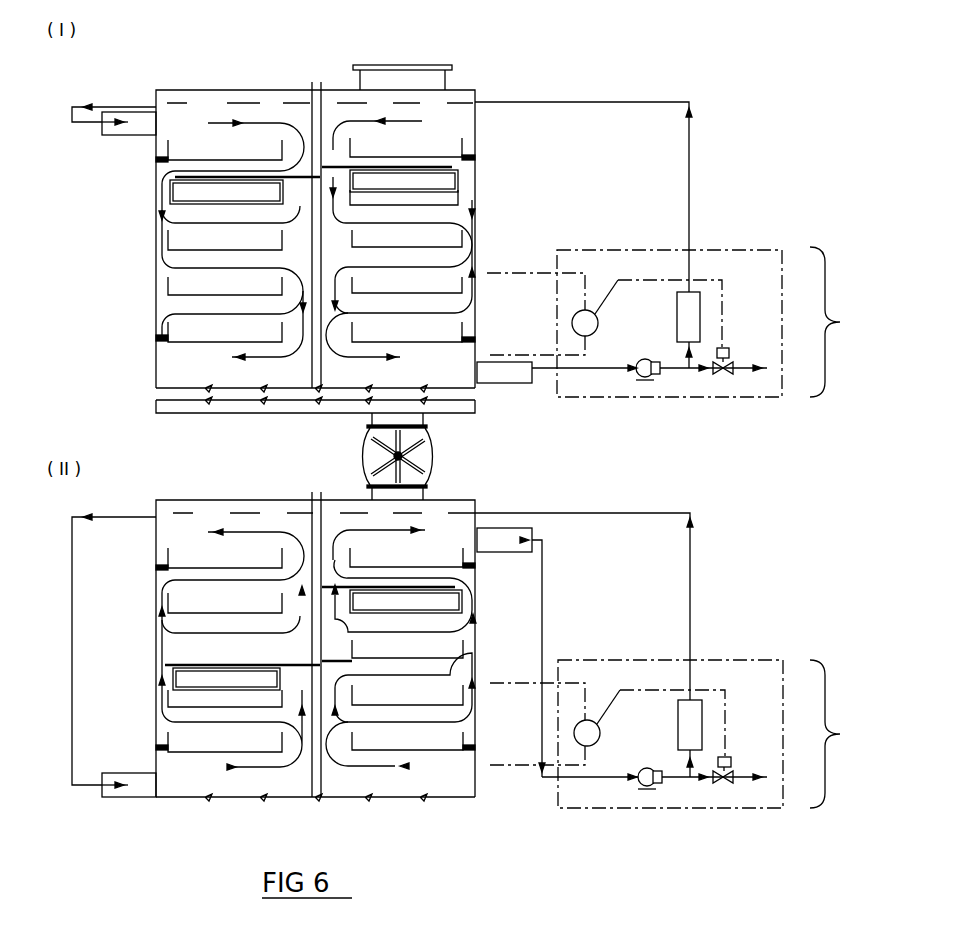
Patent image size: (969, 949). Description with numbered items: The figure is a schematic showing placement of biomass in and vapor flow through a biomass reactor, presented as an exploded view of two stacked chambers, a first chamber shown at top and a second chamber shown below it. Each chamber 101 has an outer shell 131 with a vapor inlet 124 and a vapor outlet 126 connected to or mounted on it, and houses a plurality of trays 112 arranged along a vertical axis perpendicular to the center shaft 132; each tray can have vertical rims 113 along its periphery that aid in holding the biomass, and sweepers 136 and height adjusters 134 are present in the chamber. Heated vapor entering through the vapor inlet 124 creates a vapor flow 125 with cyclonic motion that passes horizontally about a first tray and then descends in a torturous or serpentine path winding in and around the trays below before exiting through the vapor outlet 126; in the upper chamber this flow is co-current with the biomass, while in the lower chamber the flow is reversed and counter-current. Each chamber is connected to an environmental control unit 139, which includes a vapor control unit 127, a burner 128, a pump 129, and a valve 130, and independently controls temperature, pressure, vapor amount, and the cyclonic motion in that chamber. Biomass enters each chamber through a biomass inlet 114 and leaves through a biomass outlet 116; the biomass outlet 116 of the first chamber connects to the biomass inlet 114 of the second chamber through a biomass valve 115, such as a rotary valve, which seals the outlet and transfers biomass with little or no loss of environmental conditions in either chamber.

The chamber 101 is at (495, 72).
The tray 112 is at (178, 158).
The vertical rim 113 is at (284, 156).
The biomass inlet 114 is at (380, 78).
The biomass valve 115 is at (425, 455).
The biomass outlet 116 is at (425, 425).
The vapor inlet 124 is at (137, 123).
The vapor flow 125 is at (158, 207).
The vapor outlet 126 is at (497, 378).
The vapor control unit 127 is at (683, 399).
The burner 128 is at (677, 316).
The pump 129 is at (641, 360).
The valve 130 is at (726, 372).
The outer shell 131 is at (156, 275).
The center shaft 132 is at (317, 85).
The height adjuster 134 is at (427, 183).
The sweeper 136 is at (195, 197).
The environmental control unit 139 is at (843, 527).